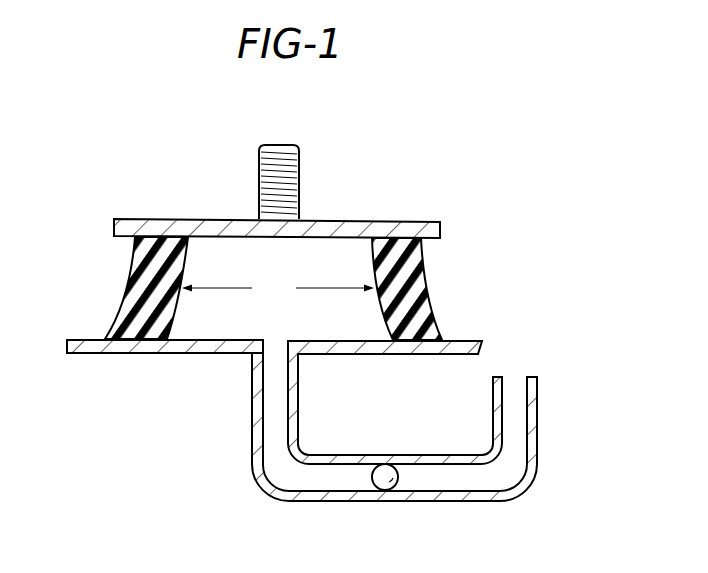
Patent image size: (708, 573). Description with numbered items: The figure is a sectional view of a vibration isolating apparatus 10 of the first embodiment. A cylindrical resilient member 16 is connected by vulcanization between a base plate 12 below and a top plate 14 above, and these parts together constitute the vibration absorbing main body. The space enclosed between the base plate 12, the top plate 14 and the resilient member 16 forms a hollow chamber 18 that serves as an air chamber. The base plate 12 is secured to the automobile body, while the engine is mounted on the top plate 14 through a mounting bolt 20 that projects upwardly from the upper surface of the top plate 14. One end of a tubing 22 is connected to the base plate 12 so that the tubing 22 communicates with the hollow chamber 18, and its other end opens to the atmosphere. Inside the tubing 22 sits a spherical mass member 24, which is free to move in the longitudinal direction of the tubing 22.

The vibration isolating apparatus 10 is at (443, 210).
The base plate 12 is at (129, 355).
The top plate 14 is at (191, 218).
The cylindrical resilient member 16 is at (427, 291).
The hollow chamber 18 is at (327, 326).
The mounting bolt 20 is at (300, 183).
The tubing 22 is at (292, 503).
The spherical mass member 24 is at (374, 490).